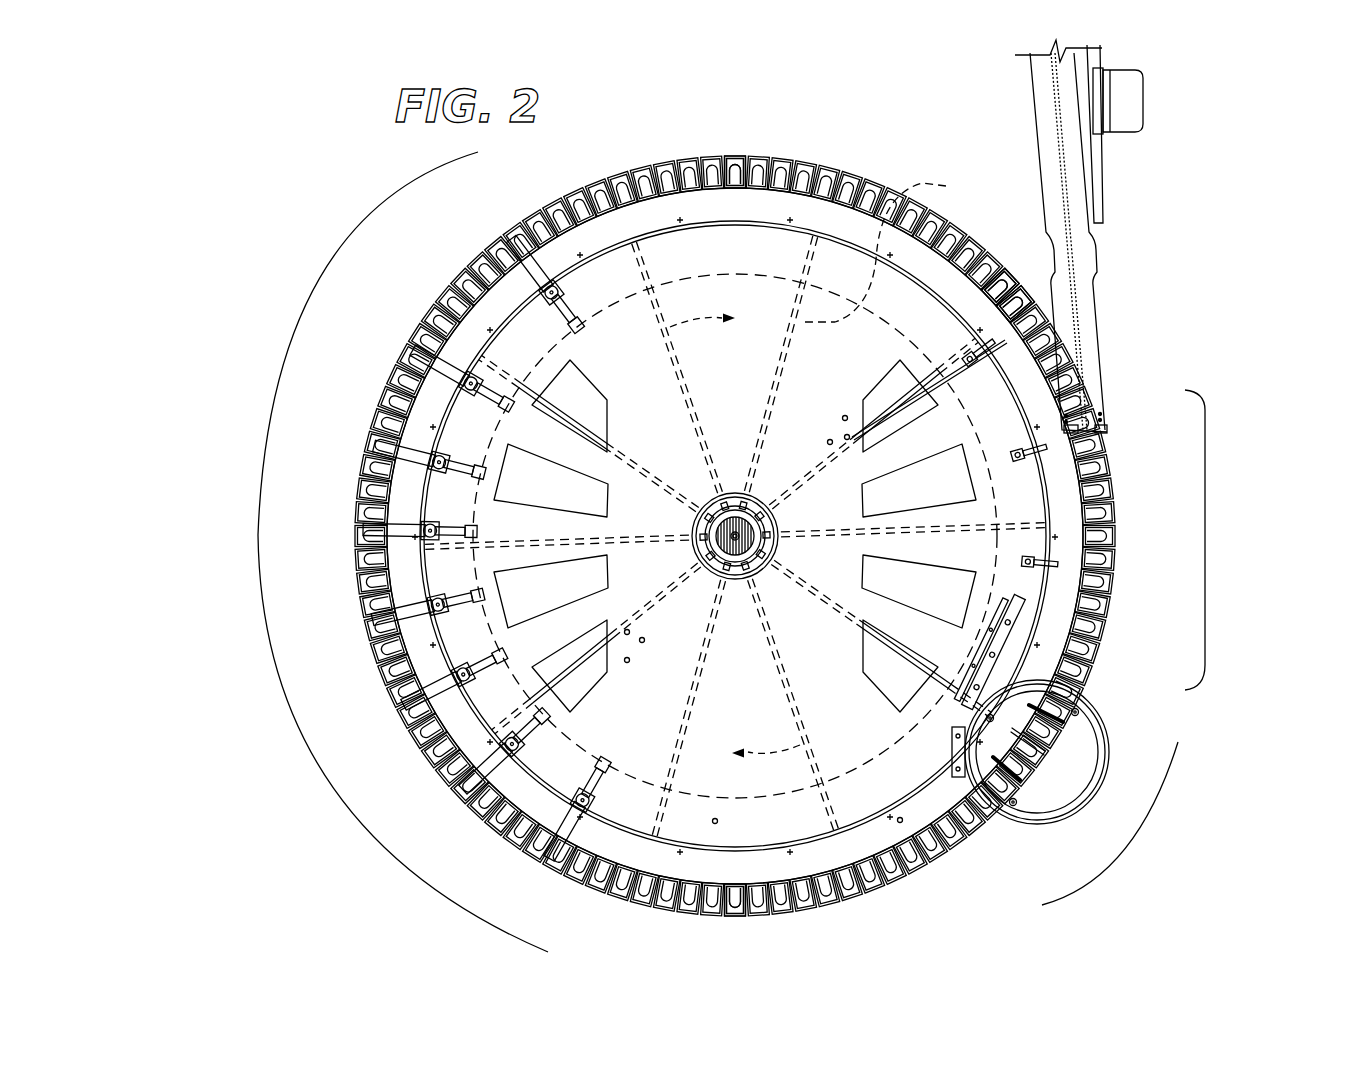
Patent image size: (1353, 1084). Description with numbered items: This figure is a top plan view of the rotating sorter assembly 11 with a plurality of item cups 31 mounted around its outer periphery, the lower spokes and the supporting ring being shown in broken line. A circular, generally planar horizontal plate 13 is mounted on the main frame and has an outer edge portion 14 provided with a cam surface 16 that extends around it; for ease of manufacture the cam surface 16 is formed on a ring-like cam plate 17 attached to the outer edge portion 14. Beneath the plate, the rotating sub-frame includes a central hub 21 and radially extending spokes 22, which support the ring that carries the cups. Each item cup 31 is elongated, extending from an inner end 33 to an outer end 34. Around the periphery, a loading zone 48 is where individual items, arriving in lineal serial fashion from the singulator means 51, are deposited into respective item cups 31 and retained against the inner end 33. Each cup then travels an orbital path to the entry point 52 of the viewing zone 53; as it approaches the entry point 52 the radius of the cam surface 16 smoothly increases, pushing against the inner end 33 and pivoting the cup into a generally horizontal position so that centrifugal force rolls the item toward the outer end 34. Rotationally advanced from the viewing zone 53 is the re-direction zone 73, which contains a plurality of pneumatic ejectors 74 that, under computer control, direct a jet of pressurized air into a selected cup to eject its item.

The sorter assembly 11 is at (1203, 723).
The plate 13 is at (614, 328).
The outer edge portion 14 is at (835, 268).
The cam surface 16 is at (688, 196).
The cam plate 17 is at (756, 208).
The central hub 21 is at (735, 492).
The spokes 22 is at (418, 322).
The item cups 31 is at (478, 240).
The inner end 33 is at (1018, 278).
The outer end 34 is at (392, 372).
The loading zone 48 is at (1244, 587).
The singulator means 51 is at (1108, 205).
The entry point 52 is at (1101, 690).
The viewing zone 53 is at (1161, 919).
The re-direction zone 73 is at (149, 611).
The pneumatic ejectors 74 is at (430, 357).